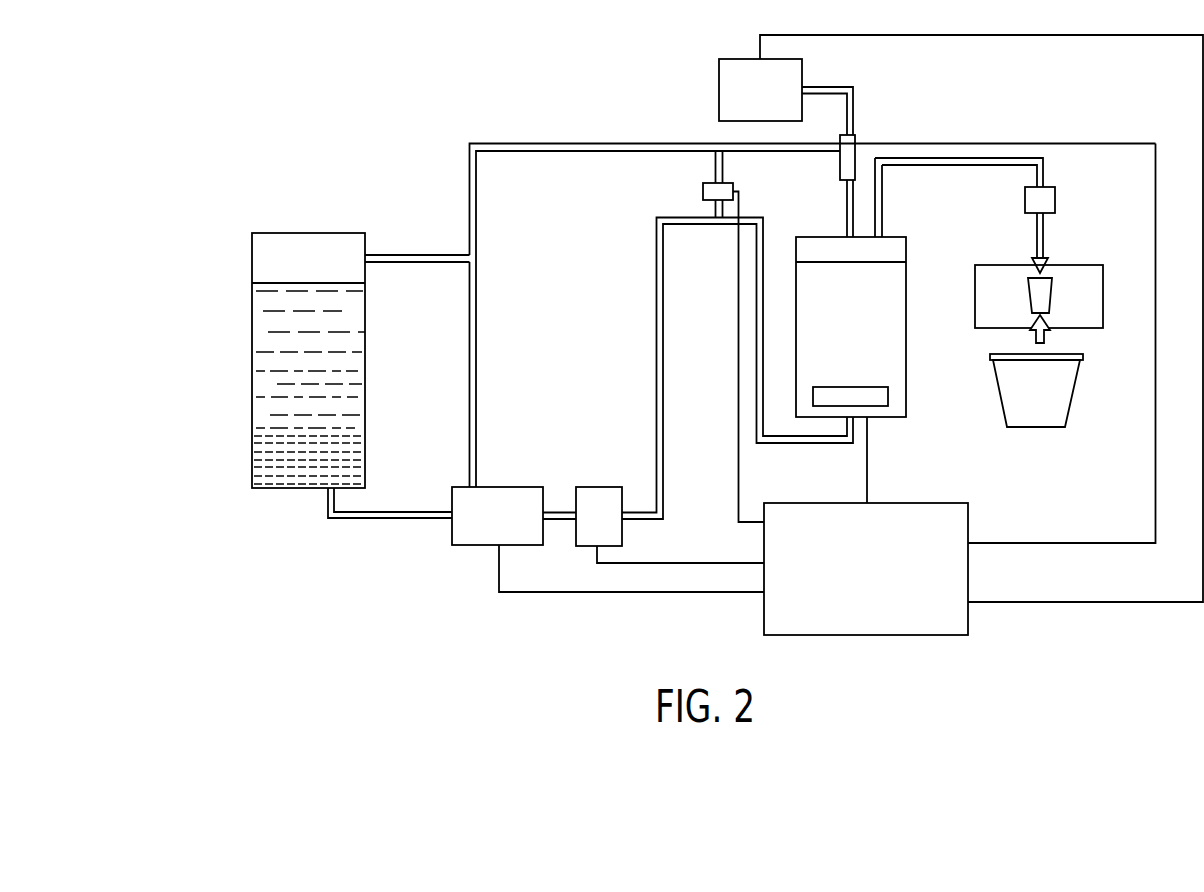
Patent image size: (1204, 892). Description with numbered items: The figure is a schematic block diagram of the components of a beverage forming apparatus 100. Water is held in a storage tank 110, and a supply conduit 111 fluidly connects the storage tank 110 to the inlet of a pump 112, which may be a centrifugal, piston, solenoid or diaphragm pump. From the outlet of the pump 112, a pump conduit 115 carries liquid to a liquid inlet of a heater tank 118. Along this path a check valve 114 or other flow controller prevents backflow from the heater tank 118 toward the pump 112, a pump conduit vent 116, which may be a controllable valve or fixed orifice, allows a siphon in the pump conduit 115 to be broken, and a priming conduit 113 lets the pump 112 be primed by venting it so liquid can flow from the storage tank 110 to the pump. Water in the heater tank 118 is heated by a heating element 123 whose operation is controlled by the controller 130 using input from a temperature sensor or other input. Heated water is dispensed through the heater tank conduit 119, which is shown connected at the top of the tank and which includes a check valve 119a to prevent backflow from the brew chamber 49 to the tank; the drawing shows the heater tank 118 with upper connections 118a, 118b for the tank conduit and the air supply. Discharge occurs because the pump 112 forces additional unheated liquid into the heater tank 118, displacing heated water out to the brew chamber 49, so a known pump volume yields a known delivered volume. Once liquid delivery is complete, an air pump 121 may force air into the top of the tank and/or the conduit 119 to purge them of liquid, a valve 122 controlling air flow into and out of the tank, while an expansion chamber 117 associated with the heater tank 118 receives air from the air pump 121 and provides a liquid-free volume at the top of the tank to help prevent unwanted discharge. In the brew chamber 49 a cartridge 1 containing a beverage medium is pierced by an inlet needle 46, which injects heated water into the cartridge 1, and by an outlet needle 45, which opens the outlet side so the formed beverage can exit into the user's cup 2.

The beverage forming apparatus 100 is at (392, 92).
The storage tank 110 is at (251, 415).
The supply conduit 111 is at (351, 521).
The pump 112 is at (460, 547).
The priming conduit 113 is at (477, 337).
The check valve 114 is at (598, 486).
The pump conduit 115 is at (656, 263).
The pump conduit vent 116 is at (702, 190).
The expansion chamber 117 is at (808, 250).
The heater tank 118 is at (876, 303).
The heater inlet 118a is at (883, 236).
The heater inlet 118b is at (845, 236).
The heater tank conduit 119 is at (973, 157).
The check valve 119a is at (1056, 194).
The air pump 121 is at (718, 92).
The valve 122 is at (856, 134).
The heating element 123 is at (873, 407).
The controller 130 is at (952, 637).
The inlet needle 46 is at (1043, 271).
The brew chamber 49 is at (1091, 261).
The cartridge 1 is at (1025, 300).
The outlet needle 45 is at (1050, 331).
The cup 2 is at (1046, 427).